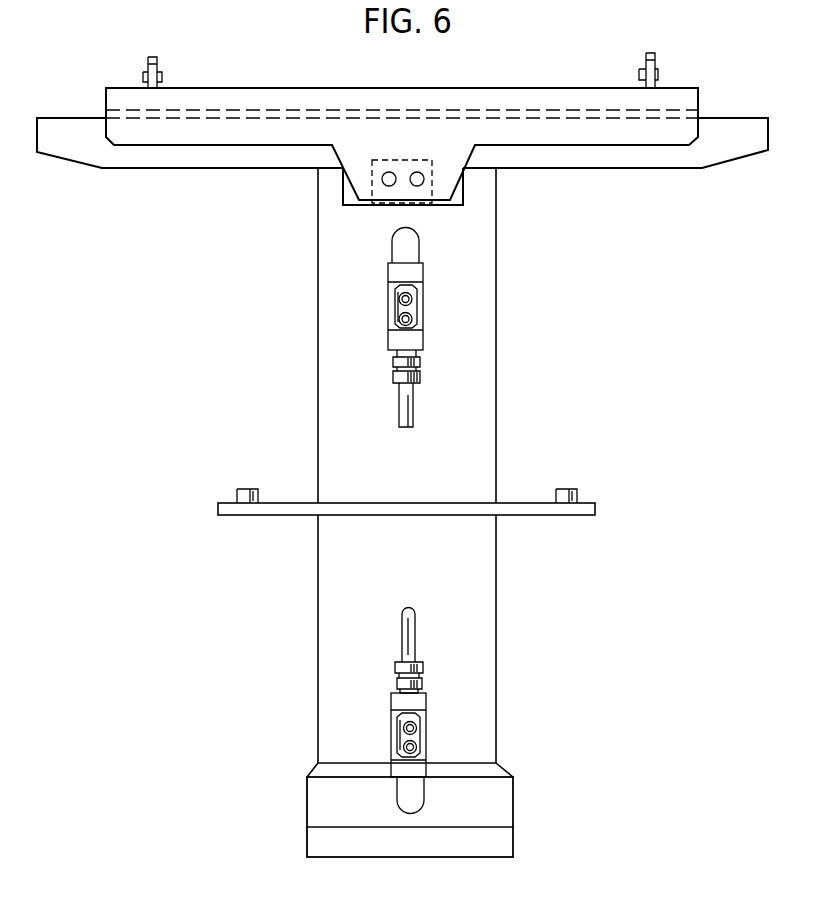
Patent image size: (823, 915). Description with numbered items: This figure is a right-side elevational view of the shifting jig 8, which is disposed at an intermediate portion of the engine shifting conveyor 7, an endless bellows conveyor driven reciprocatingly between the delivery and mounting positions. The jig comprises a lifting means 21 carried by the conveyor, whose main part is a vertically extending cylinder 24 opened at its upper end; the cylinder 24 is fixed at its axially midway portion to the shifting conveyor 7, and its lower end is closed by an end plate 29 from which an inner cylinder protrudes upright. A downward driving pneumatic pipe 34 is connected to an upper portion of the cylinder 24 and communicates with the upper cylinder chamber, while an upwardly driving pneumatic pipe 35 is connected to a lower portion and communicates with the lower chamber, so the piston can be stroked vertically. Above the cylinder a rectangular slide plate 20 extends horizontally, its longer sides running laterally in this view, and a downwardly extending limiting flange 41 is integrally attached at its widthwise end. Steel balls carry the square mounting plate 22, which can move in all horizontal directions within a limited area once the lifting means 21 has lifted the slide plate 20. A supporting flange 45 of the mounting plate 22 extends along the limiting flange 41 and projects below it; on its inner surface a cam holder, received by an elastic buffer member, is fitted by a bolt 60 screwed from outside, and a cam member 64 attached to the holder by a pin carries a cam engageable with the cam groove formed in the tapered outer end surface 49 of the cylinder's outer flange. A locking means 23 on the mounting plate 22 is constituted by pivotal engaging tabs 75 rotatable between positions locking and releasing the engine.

The engine shifting conveyor 7 is at (275, 508).
The shifting jig 8 is at (293, 225).
The slide plate 20 is at (71, 121).
The lifting means 21 is at (317, 601).
The mounting plate 22 is at (528, 90).
The locking means 23 is at (140, 57).
The cylinder 24 is at (323, 392).
The end plate 29 is at (311, 839).
The downward driving pneumatic pipe 34 is at (413, 405).
The upwardly driving pneumatic pipe 35 is at (415, 635).
The limiting flange 41 is at (133, 164).
The supporting flange 45 is at (207, 130).
The outer end surface 49 is at (352, 203).
The bolt 60 is at (392, 186).
The cam member 64 is at (389, 171).
The engaging tab 75 is at (158, 64).